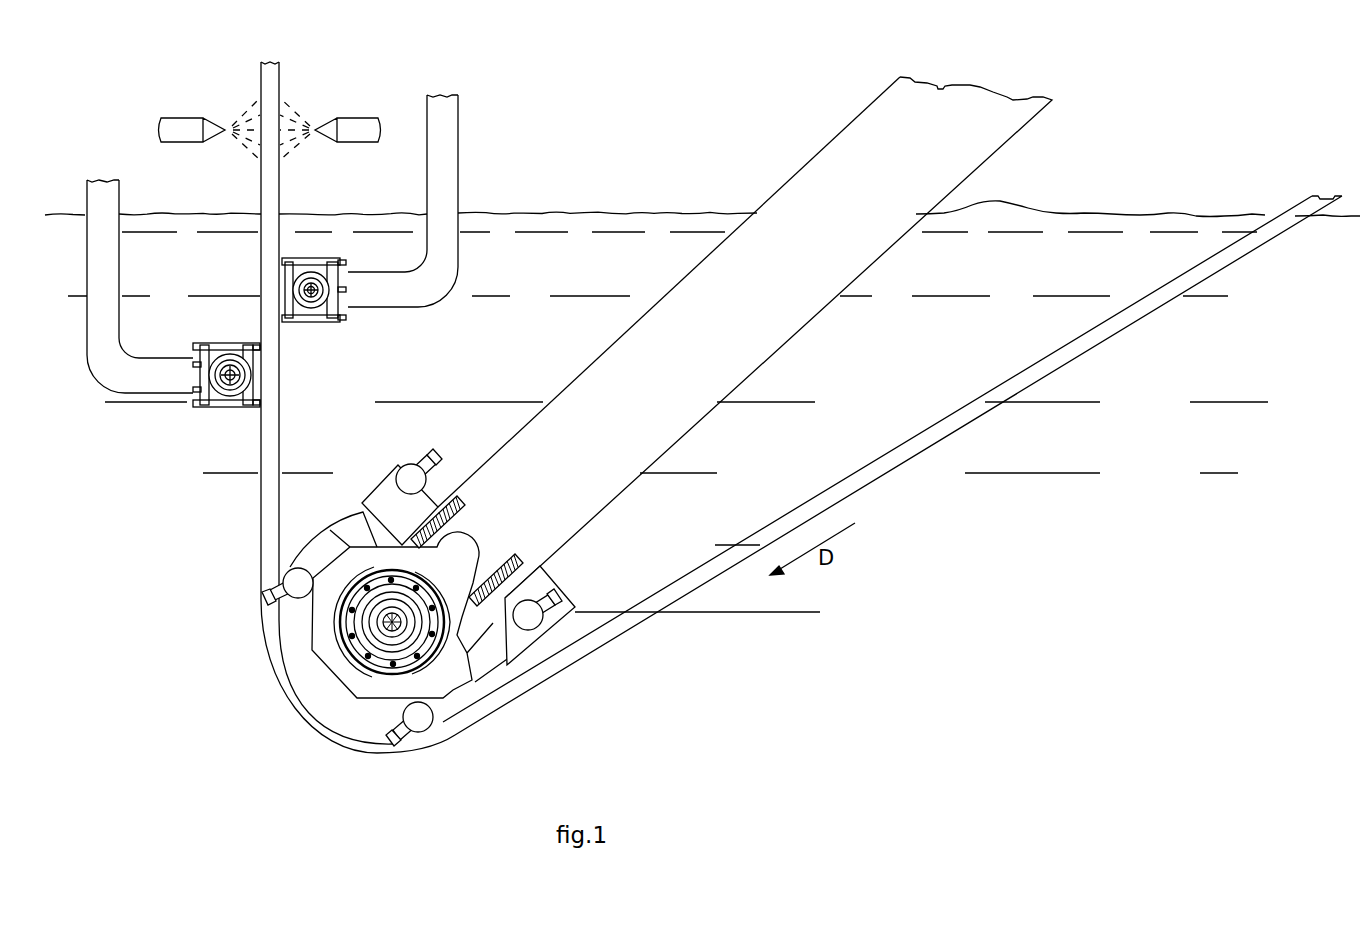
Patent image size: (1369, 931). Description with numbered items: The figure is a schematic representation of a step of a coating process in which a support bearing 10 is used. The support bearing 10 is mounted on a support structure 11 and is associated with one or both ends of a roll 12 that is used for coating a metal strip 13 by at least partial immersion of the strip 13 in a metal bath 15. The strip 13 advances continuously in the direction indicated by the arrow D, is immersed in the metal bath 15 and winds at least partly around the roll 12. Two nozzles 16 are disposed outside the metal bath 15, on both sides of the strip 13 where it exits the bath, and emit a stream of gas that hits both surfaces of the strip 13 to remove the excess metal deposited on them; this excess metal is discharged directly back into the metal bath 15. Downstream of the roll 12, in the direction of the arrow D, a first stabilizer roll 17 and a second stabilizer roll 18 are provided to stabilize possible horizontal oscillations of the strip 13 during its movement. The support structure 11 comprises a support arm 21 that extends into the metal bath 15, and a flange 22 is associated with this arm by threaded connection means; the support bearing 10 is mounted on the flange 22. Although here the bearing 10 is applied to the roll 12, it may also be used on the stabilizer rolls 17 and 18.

The support bearing 10 is at (389, 564).
The support structure 11 is at (745, 326).
The roll 12 is at (340, 690).
The metal strip 13 is at (866, 474).
The metal bath 15 is at (562, 210).
The nozzles 16 is at (185, 123).
The first stabilizer roll 17 is at (260, 387).
The second stabilizer roll 18 is at (289, 262).
The support arm 21 is at (968, 110).
The flange 22 is at (447, 575).